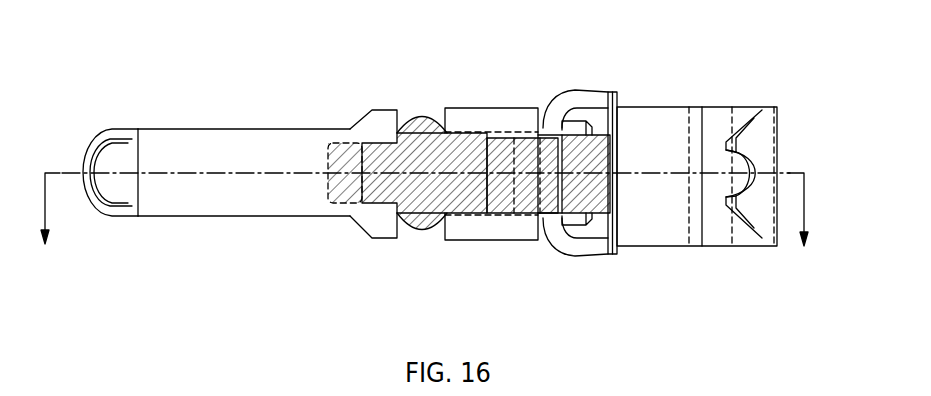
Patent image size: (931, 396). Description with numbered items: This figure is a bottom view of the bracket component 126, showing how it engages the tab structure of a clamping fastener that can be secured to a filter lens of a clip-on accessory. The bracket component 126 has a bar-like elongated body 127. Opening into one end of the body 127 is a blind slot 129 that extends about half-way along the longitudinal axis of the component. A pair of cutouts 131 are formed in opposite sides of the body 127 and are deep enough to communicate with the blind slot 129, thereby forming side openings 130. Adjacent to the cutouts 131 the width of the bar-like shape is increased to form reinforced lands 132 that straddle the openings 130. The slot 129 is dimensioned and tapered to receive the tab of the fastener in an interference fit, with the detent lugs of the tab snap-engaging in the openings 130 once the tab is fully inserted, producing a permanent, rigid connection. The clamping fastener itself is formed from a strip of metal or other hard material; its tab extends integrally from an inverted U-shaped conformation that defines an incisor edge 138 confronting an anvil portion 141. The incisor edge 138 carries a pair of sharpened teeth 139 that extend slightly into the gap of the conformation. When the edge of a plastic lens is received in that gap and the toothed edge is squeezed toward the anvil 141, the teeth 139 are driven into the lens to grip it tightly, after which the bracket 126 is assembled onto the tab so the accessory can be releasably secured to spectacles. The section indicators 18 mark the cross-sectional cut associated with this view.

The section line 18- 18 is at (425, 230).
The bracket component 126 is at (234, 105).
The bar-like elongated body 127 is at (187, 129).
The blind slot 129 is at (352, 140).
The side openings 130 is at (428, 126).
The cutouts 131 is at (447, 112).
The reinforced lands 132 is at (368, 110).
The incisor edge 138 is at (768, 143).
The sharpened teeth 139 is at (720, 142).
The anvil portion 141 is at (625, 103).